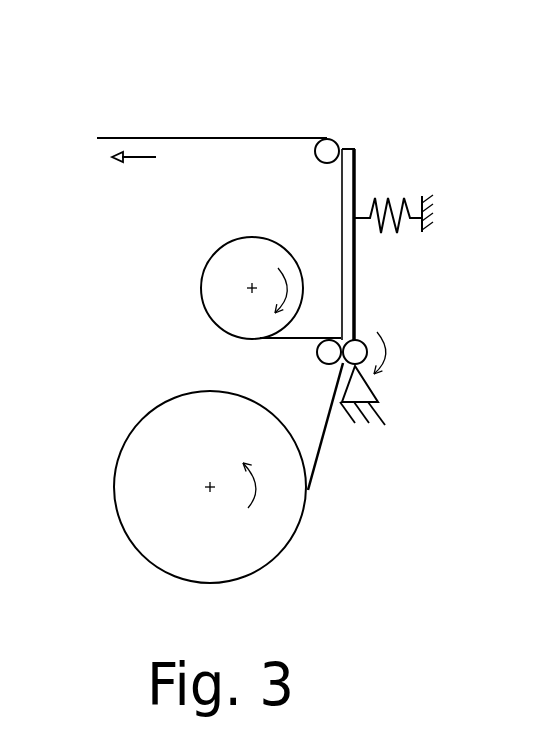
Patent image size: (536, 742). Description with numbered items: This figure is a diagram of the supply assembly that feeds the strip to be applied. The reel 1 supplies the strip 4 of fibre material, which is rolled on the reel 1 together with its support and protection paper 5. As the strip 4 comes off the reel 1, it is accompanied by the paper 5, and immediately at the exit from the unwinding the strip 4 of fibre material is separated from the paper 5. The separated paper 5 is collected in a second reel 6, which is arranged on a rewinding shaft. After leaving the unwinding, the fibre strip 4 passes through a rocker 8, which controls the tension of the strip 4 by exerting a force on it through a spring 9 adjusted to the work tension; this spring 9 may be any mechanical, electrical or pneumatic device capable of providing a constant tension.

The reel 1 is at (148, 517).
The strip 4 is at (215, 138).
The support and protection paper 5 is at (305, 338).
The reel 6 is at (228, 275).
The rocker 8 is at (357, 279).
The spring 9 is at (388, 207).